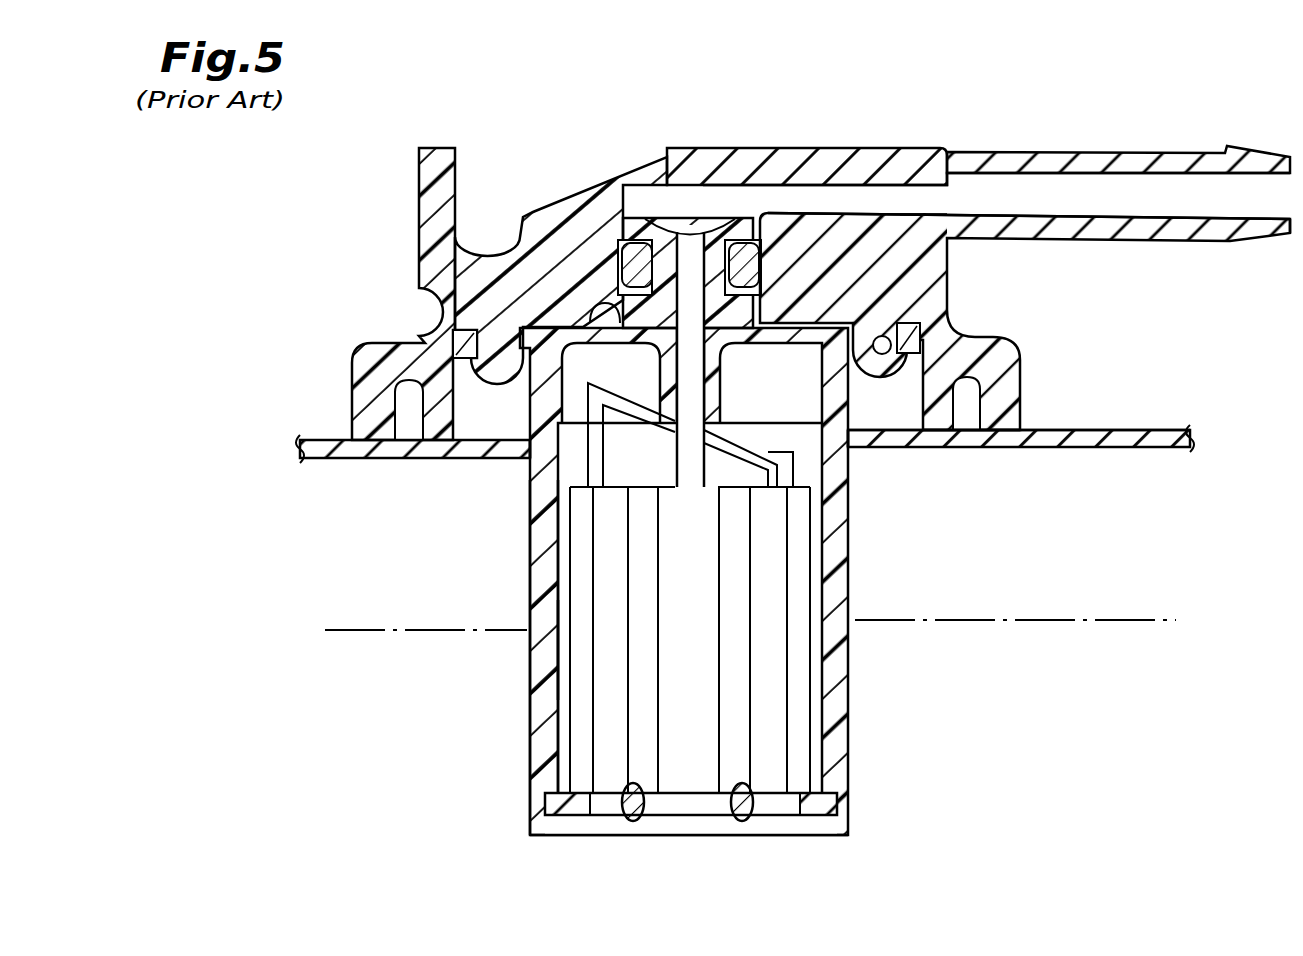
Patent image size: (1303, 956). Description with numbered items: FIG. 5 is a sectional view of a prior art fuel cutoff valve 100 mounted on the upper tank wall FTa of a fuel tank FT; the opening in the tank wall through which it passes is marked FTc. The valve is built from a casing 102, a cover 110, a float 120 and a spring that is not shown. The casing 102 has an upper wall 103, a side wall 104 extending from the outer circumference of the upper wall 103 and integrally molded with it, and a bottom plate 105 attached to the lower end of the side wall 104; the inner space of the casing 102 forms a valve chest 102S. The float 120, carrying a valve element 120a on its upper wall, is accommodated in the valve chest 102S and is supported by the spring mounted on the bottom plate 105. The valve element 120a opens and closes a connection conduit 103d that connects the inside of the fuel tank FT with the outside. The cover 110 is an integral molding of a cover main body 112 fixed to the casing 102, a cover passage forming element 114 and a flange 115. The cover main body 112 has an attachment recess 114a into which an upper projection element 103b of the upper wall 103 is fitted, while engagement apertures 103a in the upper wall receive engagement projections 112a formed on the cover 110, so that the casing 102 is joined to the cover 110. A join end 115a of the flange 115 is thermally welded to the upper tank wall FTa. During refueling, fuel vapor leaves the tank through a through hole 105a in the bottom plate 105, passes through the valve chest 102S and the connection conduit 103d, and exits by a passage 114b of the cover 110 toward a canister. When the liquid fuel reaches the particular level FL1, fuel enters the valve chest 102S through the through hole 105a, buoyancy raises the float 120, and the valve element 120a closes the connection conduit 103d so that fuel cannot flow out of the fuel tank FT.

The fuel cutoff valve 100 is at (478, 104).
The casing 102 is at (403, 490).
The valve chest 102S is at (560, 632).
The upper wall 103 is at (535, 470).
The engagement apertures 103a is at (918, 365).
The upper projection element 103b is at (935, 205).
The connection conduit 103d is at (692, 250).
The side wall 104 is at (540, 572).
The bottom plate 105 is at (575, 805).
The through hole 105a is at (605, 805).
The cover 110 is at (736, 151).
The cover main body 112 is at (570, 205).
The engagement projections 112a is at (880, 352).
The cover passage forming element 114 is at (1066, 165).
The attachment recess 114a is at (835, 165).
The passage 114b is at (1168, 190).
The flange 115 is at (1003, 387).
The join end 115a is at (1005, 432).
The float 120 is at (775, 745).
The valve element 120a is at (790, 450).
The fuel tank FT is at (1188, 433).
The upper tank wall FTa is at (1133, 430).
The tank opening FTc is at (848, 445).
The particular level FL1 is at (1048, 620).